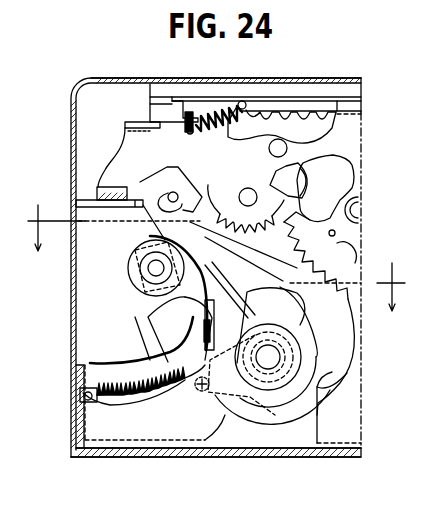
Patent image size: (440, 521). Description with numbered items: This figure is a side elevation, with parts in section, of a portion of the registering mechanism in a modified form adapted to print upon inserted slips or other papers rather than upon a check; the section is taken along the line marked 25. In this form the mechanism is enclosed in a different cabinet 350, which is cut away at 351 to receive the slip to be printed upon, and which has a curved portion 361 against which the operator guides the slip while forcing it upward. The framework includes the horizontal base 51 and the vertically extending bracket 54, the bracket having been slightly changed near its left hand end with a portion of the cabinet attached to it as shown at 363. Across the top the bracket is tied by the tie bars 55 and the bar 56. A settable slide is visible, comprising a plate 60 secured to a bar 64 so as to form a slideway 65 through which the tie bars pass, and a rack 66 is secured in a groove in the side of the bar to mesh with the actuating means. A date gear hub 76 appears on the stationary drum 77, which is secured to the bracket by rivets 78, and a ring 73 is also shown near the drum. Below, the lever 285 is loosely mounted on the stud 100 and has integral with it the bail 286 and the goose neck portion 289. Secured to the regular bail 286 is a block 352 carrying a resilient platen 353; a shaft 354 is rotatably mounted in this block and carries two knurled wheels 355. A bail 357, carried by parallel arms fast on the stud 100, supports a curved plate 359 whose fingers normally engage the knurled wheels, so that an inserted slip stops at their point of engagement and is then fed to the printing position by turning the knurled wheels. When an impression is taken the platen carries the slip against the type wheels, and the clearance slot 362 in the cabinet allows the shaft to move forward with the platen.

The cabinet 350 is at (200, 78).
The cut away 351 is at (85, 331).
The horizontal base 51 is at (143, 455).
The bracket 54 is at (337, 432).
The tie bars 55 is at (357, 104).
The bar 56 is at (128, 122).
The plate 60 is at (285, 95).
The bar 64 is at (165, 112).
The slideway 65 is at (235, 98).
The rack 66 is at (317, 118).
The ring 73 is at (361, 208).
The hub 76 is at (310, 166).
The stationary drum 77 is at (343, 163).
The rivets 78 is at (335, 233).
The section line 25- 25 is at (216, 258).
The stud 100 is at (267, 360).
The lever 285 is at (246, 295).
The bail 286 is at (183, 297).
The goose neck portion 289 is at (328, 312).
The block 352 is at (128, 260).
The resilient platen 353 is at (170, 252).
The shaft 354 is at (132, 288).
The knurled wheels 355 is at (130, 268).
The bail 357 is at (216, 343).
The curved plate 359 is at (160, 335).
The curved portion 361 is at (150, 342).
The clearance slot 362 is at (178, 240).
The portion of the cabinet 363 is at (98, 182).